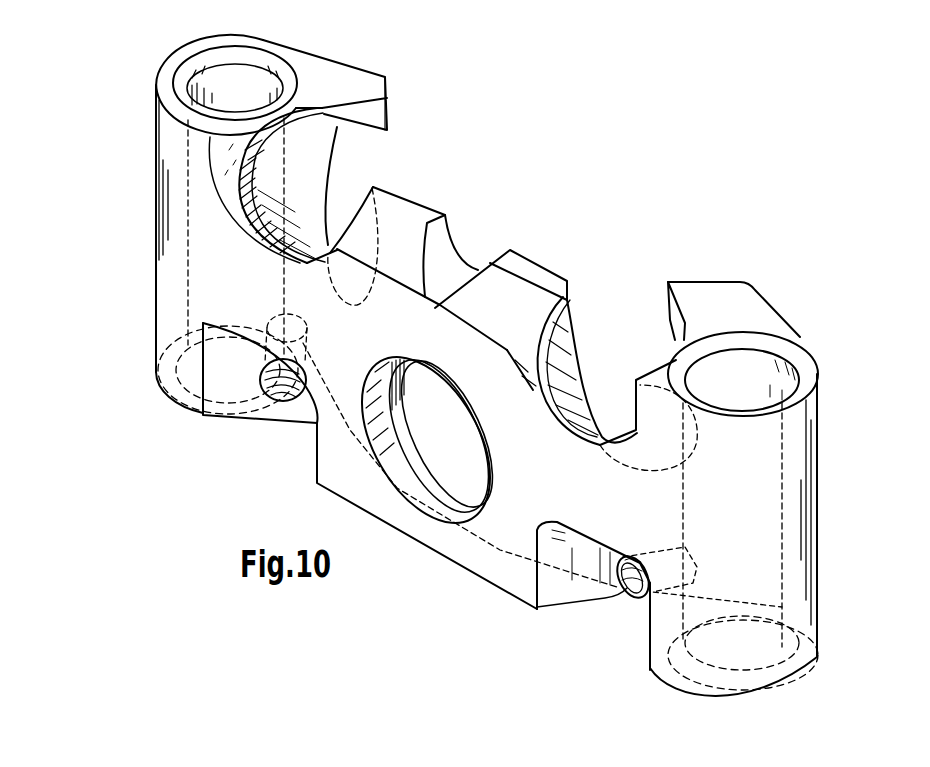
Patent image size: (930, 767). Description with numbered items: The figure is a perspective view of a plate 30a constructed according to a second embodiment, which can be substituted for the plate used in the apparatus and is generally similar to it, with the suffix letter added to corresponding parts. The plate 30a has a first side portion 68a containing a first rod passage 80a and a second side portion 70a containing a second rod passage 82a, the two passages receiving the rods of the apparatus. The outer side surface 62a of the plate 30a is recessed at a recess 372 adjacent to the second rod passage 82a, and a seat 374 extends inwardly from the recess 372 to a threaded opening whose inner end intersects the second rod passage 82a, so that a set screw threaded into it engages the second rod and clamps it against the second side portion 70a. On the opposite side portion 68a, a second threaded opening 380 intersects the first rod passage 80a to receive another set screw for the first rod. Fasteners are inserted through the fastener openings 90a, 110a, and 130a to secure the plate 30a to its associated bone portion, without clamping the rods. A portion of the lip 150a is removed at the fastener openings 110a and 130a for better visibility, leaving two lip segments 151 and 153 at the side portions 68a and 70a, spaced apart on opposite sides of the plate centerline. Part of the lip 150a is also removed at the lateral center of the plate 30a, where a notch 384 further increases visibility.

The plate 30a is at (598, 214).
The outer side surface 62a is at (343, 458).
The side portion 68a is at (155, 308).
The second side portion 70a is at (820, 540).
The first rod passage 80a is at (235, 88).
The second rod passage 82a is at (747, 377).
The fastener opening 90a is at (397, 491).
The fastener opening 110a is at (211, 200).
The fastener opening 130a is at (559, 418).
The lip 150a is at (426, 100).
The lip segment 151 is at (372, 90).
The lip segment 153 is at (706, 290).
The recess 372 is at (560, 592).
The seat 374 is at (624, 602).
The second threaded opening 380 is at (283, 402).
The notch 384 is at (470, 247).